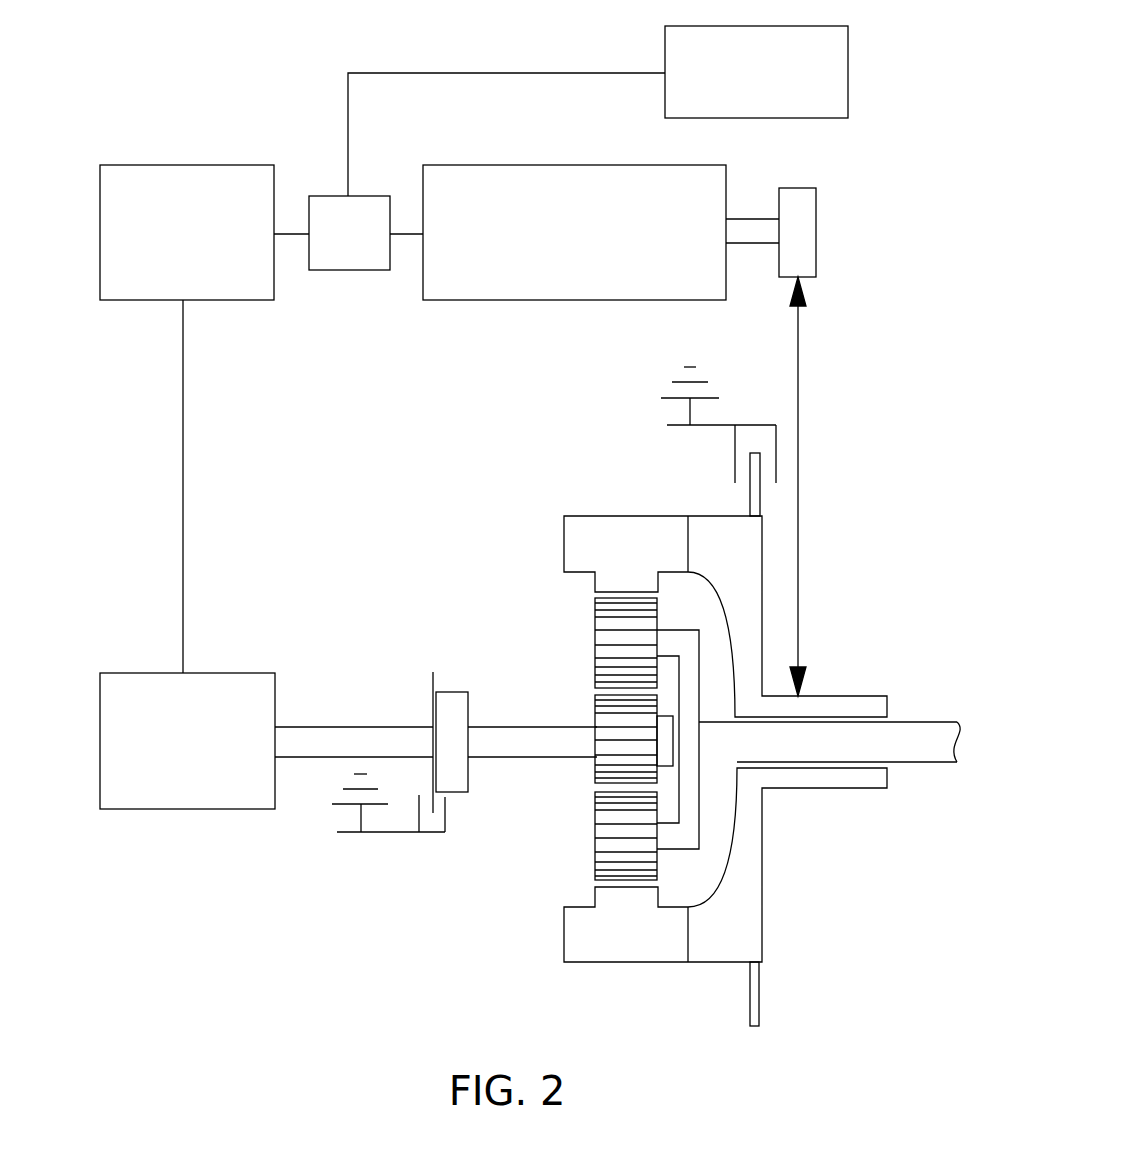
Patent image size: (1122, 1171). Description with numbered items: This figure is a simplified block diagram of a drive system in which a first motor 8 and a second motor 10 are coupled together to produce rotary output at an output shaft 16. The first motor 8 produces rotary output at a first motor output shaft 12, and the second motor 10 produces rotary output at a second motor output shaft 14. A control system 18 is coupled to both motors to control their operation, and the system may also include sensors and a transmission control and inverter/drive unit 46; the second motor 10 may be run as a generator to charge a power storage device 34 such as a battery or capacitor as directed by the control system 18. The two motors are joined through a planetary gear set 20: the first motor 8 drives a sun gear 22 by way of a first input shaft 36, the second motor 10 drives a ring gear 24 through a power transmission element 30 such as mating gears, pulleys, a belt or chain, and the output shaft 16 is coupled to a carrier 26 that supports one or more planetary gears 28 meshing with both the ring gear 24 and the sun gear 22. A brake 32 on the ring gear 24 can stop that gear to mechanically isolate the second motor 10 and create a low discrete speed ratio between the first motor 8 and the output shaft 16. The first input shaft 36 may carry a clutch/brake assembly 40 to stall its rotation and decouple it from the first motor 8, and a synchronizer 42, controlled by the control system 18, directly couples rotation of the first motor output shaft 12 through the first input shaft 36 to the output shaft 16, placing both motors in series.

The first motor 8 is at (120, 741).
The second motor 10 is at (497, 190).
The first motor output shaft 12 is at (342, 745).
The second motor output shaft 14 is at (756, 228).
The output shaft 16 is at (920, 735).
The control system 18 is at (200, 183).
The planetary gear set 20 is at (525, 832).
The sun gear 22 is at (582, 739).
The ring gear 24 is at (613, 538).
The carrier 26 is at (688, 833).
The planetary gear 28 is at (597, 630).
The power transmission element 30 is at (800, 487).
The brake 32 is at (732, 437).
The power storage device 34 is at (825, 72).
The first input shaft 36 is at (538, 745).
The clutch/brake assembly 40 is at (452, 710).
The synchronizer 42 is at (668, 748).
The inverter/drive unit 46 is at (348, 253).